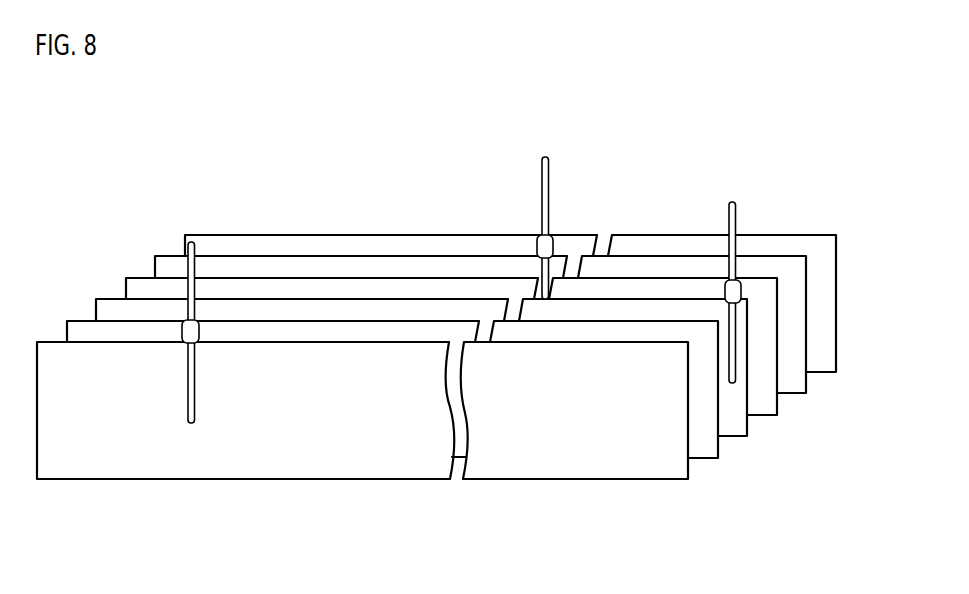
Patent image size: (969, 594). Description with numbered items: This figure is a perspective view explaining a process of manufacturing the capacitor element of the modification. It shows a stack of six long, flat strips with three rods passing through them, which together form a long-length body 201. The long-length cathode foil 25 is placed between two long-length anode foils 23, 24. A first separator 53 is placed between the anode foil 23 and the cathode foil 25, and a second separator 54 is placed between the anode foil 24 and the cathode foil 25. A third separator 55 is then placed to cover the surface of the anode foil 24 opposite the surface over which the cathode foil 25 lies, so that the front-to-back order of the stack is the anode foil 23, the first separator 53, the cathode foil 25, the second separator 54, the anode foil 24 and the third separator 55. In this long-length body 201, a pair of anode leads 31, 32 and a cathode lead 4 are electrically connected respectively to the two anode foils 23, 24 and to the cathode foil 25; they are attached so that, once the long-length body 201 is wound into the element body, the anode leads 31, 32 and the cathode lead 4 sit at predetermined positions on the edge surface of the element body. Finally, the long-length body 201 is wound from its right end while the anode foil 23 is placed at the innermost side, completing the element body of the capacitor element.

The long-length body 201 is at (443, 332).
The anode foil 23 is at (668, 467).
The first separator 53 is at (701, 448).
The cathode foil 25 is at (728, 423).
The second separator 54 is at (758, 405).
The anode foil 24 is at (788, 385).
The third separator 55 is at (819, 362).
The anode lead 31 is at (197, 246).
The anode lead 32 is at (550, 177).
The cathode lead 4 is at (738, 220).